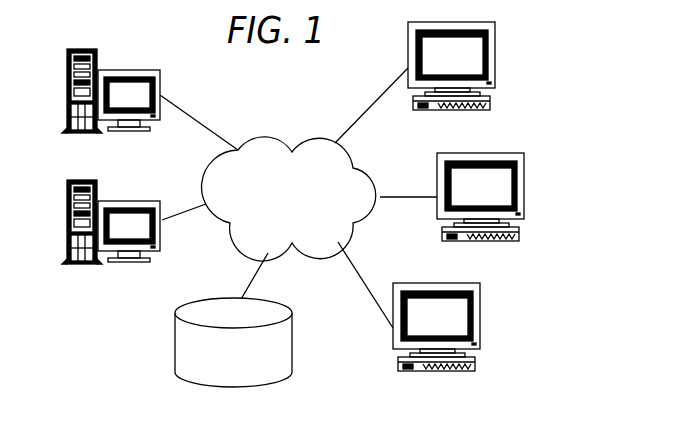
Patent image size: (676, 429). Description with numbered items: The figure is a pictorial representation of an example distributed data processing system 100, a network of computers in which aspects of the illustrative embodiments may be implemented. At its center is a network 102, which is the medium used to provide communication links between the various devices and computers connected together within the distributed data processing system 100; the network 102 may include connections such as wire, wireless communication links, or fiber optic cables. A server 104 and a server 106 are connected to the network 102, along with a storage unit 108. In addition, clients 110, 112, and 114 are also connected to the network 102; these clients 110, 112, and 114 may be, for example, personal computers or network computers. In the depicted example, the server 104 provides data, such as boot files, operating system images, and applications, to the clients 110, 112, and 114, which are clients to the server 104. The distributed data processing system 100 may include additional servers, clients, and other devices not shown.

The distributed data processing system 100 is at (136, 326).
The network 102 is at (268, 138).
The server 104 is at (127, 70).
The server 106 is at (127, 201).
The storage unit 108 is at (292, 338).
The client 110 is at (495, 58).
The client 112 is at (525, 190).
The client 114 is at (482, 320).